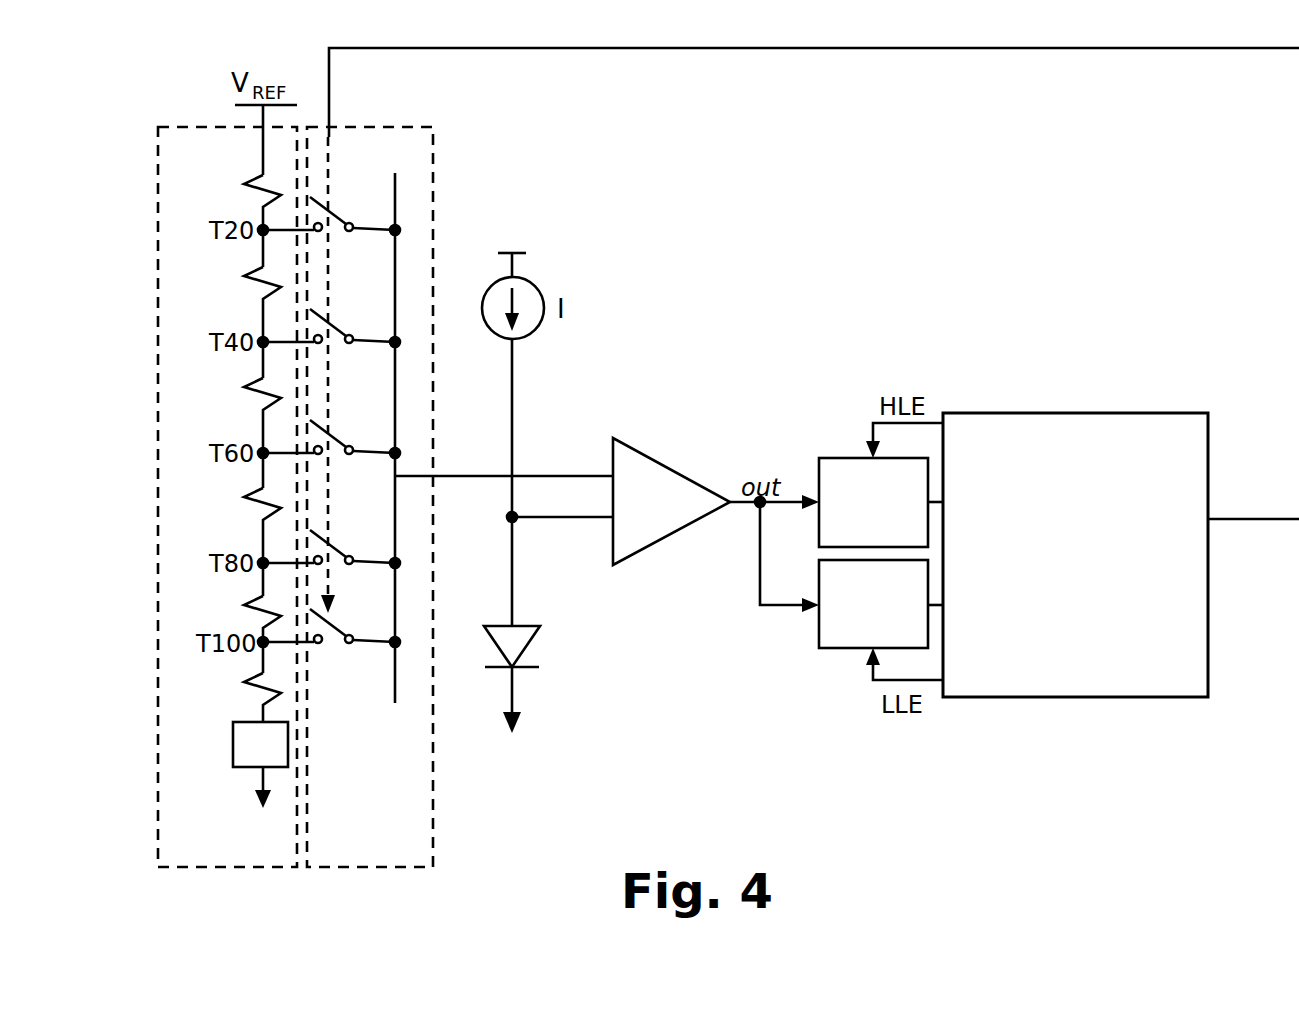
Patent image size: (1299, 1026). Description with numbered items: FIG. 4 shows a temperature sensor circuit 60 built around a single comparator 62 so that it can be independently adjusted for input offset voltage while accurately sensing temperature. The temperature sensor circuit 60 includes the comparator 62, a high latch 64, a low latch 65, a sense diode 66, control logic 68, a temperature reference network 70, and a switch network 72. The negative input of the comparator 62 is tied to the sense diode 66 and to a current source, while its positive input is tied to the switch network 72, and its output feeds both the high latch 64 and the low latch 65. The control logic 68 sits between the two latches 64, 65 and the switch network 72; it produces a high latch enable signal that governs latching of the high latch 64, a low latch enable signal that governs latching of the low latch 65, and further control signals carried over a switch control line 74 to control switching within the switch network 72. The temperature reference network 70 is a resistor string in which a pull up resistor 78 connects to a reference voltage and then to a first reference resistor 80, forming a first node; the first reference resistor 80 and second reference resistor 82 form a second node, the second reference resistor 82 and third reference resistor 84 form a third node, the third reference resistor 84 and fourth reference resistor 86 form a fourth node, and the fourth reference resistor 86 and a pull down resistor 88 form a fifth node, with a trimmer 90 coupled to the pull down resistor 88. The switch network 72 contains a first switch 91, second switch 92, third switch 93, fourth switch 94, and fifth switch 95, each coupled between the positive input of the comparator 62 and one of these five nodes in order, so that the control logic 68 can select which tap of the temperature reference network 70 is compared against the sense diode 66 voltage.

The temperature sensor circuit 60 is at (170, 70).
The comparator 62 is at (662, 464).
The high latch 64 is at (843, 458).
The low latch 65 is at (838, 648).
The sense diode 66 is at (530, 640).
The control logic 68 is at (1112, 413).
The temperature reference network 70 is at (158, 203).
The switch network 72 is at (433, 141).
The switch control line 74 is at (1298, 292).
The pull up resistor 78 is at (245, 200).
The first reference resistor 80 is at (244, 290).
The second reference resistor 82 is at (244, 400).
The third reference resistor 84 is at (244, 510).
The fourth reference resistor 86 is at (244, 617).
The pull down resistor 88 is at (244, 695).
The trimmer 90 is at (233, 757).
The first switch 91 is at (331, 212).
The second switch 92 is at (331, 324).
The third switch 93 is at (331, 435).
The fourth switch 94 is at (331, 545).
The fifth switch 95 is at (331, 624).